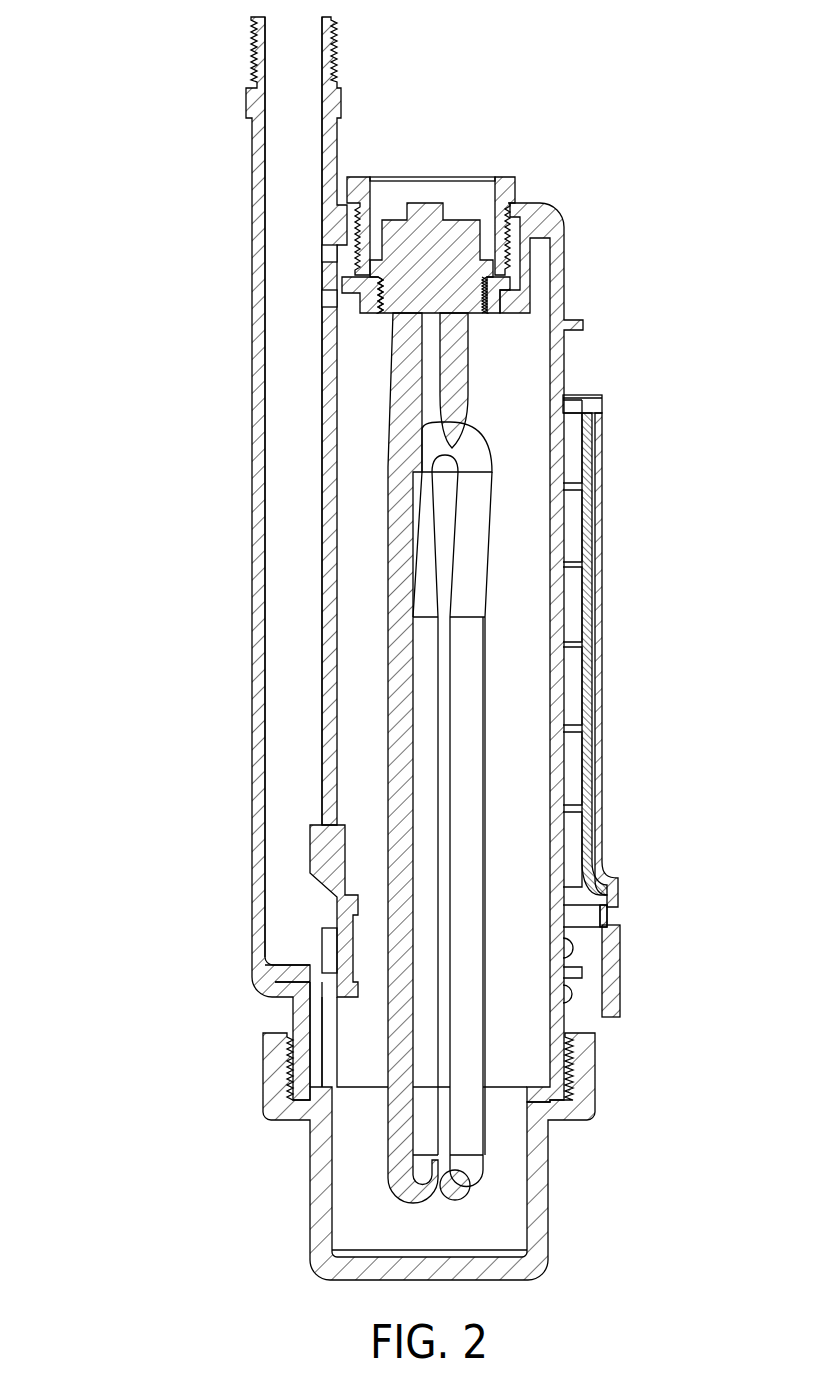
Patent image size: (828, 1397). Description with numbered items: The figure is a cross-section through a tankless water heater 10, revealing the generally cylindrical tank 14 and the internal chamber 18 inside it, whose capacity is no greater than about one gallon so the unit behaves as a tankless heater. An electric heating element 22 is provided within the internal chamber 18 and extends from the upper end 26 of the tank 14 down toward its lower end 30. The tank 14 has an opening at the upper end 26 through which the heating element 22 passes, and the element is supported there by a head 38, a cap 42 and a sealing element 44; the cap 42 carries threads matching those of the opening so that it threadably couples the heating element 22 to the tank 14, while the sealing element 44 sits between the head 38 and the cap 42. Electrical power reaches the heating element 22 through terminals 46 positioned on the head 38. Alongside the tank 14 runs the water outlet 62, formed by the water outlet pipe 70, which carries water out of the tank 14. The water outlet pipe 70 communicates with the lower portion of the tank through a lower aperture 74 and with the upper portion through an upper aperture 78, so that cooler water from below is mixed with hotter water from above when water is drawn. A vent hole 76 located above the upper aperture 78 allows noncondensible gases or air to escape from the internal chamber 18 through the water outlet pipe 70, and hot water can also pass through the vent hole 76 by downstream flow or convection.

The water heater 10 is at (113, 383).
The tank 14 is at (557, 542).
The internal chamber 18 is at (520, 993).
The heating element 22 is at (467, 808).
The upper end 26 is at (560, 288).
The lower end 30 is at (542, 1223).
The head 38 is at (472, 252).
The cap 42 is at (515, 182).
The sealing element 44 is at (490, 267).
The terminals 46 is at (422, 208).
The water outlet 62 is at (290, 275).
The water outlet pipe 70 is at (252, 165).
The lower aperture 74 is at (325, 908).
The vent hole 76 is at (322, 253).
The upper aperture 78 is at (322, 297).